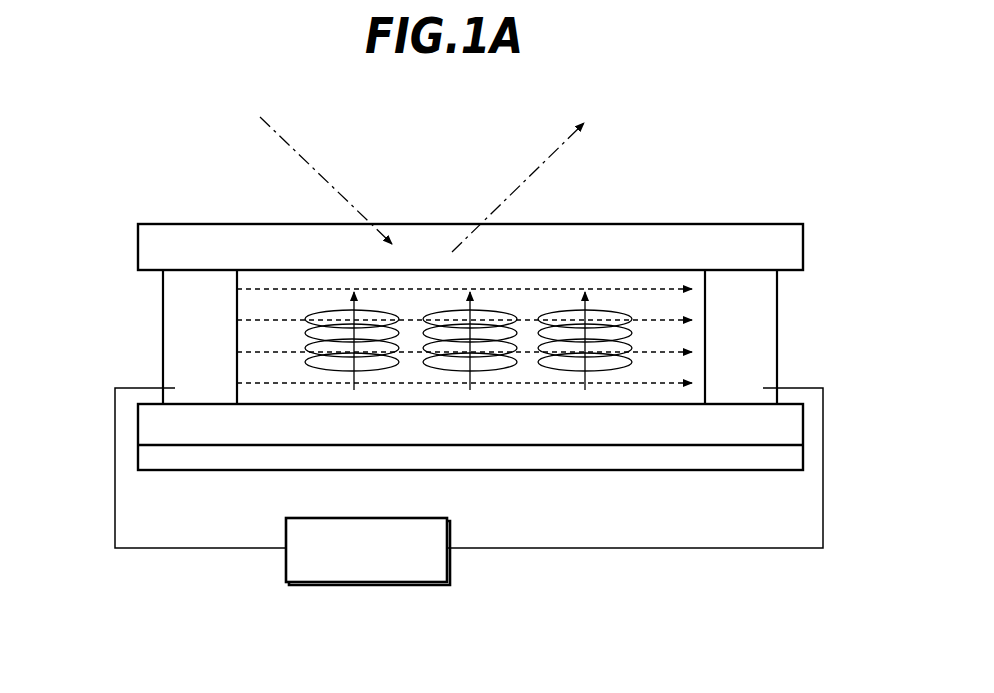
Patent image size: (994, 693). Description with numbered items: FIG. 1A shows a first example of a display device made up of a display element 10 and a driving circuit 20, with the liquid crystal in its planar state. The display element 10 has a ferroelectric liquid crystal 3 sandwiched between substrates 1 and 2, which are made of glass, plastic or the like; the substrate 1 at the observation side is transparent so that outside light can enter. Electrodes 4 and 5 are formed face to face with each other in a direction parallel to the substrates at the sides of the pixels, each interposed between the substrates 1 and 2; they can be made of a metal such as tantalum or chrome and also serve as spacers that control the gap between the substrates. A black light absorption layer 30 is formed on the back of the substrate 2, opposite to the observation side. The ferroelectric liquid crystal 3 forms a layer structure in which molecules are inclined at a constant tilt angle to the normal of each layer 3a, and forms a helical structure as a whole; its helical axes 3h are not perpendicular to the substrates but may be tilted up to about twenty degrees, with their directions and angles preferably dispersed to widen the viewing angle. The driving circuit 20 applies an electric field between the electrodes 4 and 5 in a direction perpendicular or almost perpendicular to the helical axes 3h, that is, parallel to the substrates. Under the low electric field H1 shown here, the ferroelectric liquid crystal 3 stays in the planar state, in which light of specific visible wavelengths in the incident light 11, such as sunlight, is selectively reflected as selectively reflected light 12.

The display element 10 is at (142, 122).
The substrate 1 is at (704, 233).
The substrate 2 is at (728, 429).
The light absorption layer 30 is at (505, 458).
The ferroelectric liquid crystal 3 is at (263, 393).
The layer 3a is at (327, 310).
The helical axis 3h is at (587, 374).
The electrode 4 is at (187, 317).
The electrode 5 is at (763, 328).
The incident light 11 is at (293, 147).
The selectively reflected light 12 is at (502, 200).
The low electric field H1 is at (631, 288).
The driving circuit 20 is at (365, 585).